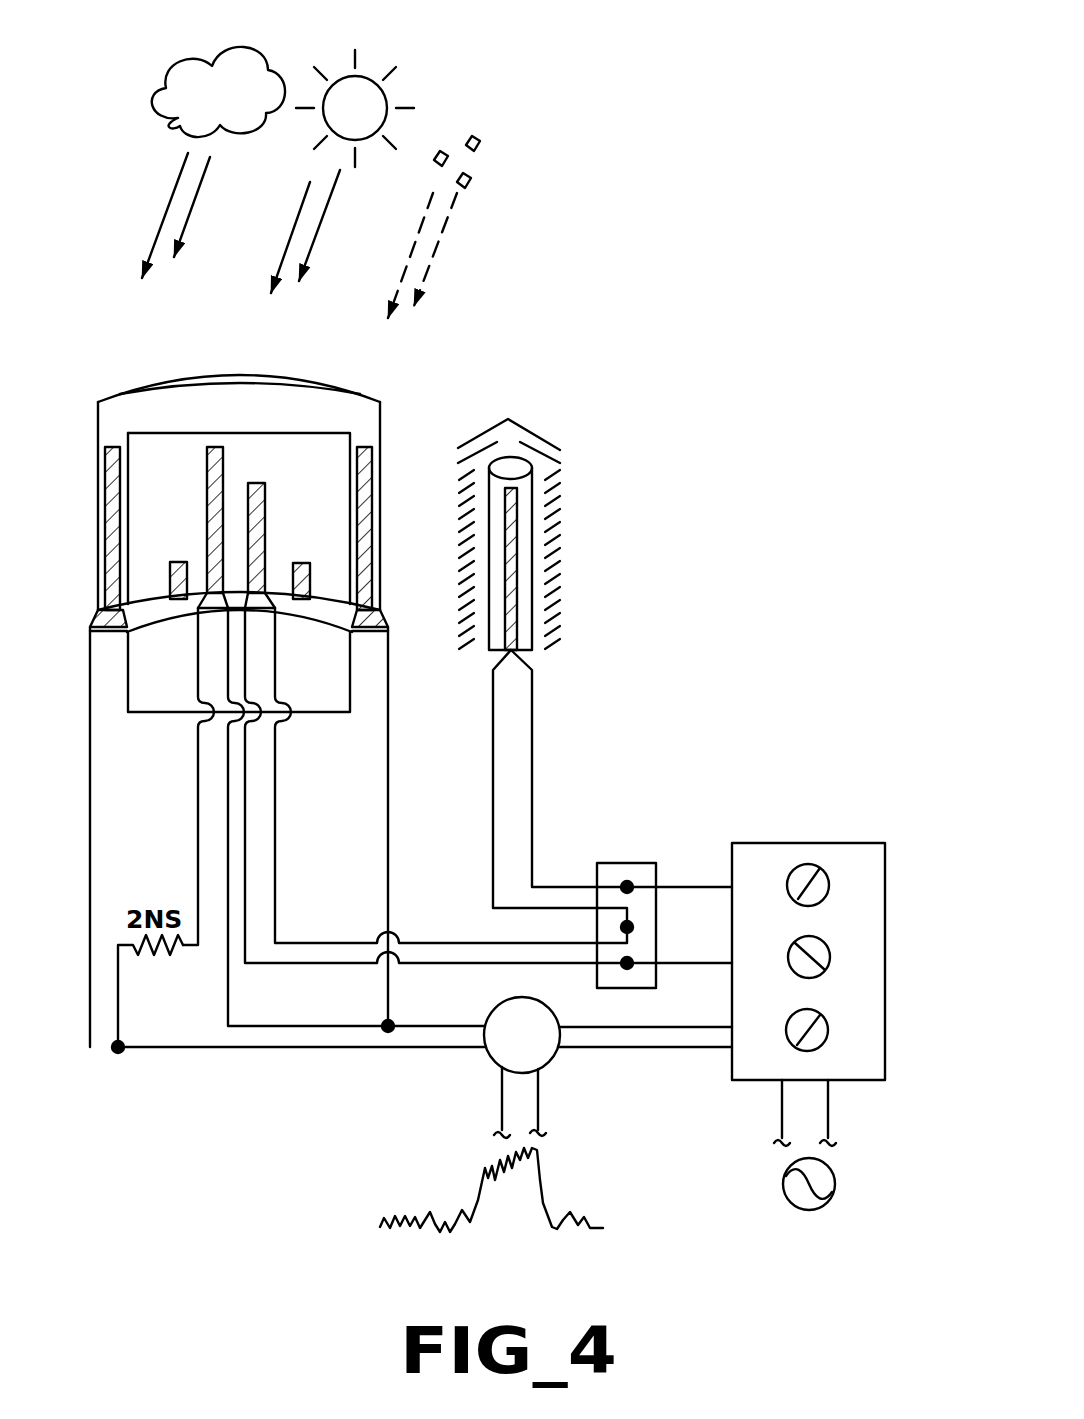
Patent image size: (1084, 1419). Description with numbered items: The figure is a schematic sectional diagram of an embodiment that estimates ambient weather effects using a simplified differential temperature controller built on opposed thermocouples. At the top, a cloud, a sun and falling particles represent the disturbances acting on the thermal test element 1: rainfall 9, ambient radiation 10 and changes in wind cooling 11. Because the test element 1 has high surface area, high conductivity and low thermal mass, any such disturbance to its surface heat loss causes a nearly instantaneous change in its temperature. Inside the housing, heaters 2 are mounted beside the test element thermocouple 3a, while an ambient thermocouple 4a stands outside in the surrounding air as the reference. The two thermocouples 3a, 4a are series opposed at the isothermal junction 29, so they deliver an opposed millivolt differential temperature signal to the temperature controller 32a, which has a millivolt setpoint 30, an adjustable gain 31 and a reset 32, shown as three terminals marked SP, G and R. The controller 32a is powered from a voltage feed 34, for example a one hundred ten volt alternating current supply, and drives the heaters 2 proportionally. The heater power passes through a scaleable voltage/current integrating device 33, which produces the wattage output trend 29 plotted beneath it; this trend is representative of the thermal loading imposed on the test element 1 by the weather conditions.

The thermal test element 1 is at (275, 377).
The heaters 2 is at (207, 484).
The test element thermocouple 3a is at (265, 512).
The ambient thermocouple 4a is at (517, 530).
The rainfall 9 is at (481, 119).
The ambient radiation 10 is at (369, 61).
The wind cooling 11 is at (190, 37).
The isothermal junction / wattage output trend 29 is at (623, 862).
The millivolt setpoint 30 is at (831, 878).
The adjustable gain 31 is at (831, 945).
The reset 32 is at (829, 1020).
The temperature controller 32a is at (795, 843).
The voltage/current integrating device 33 is at (495, 1012).
The voltage feed 34 is at (837, 1178).